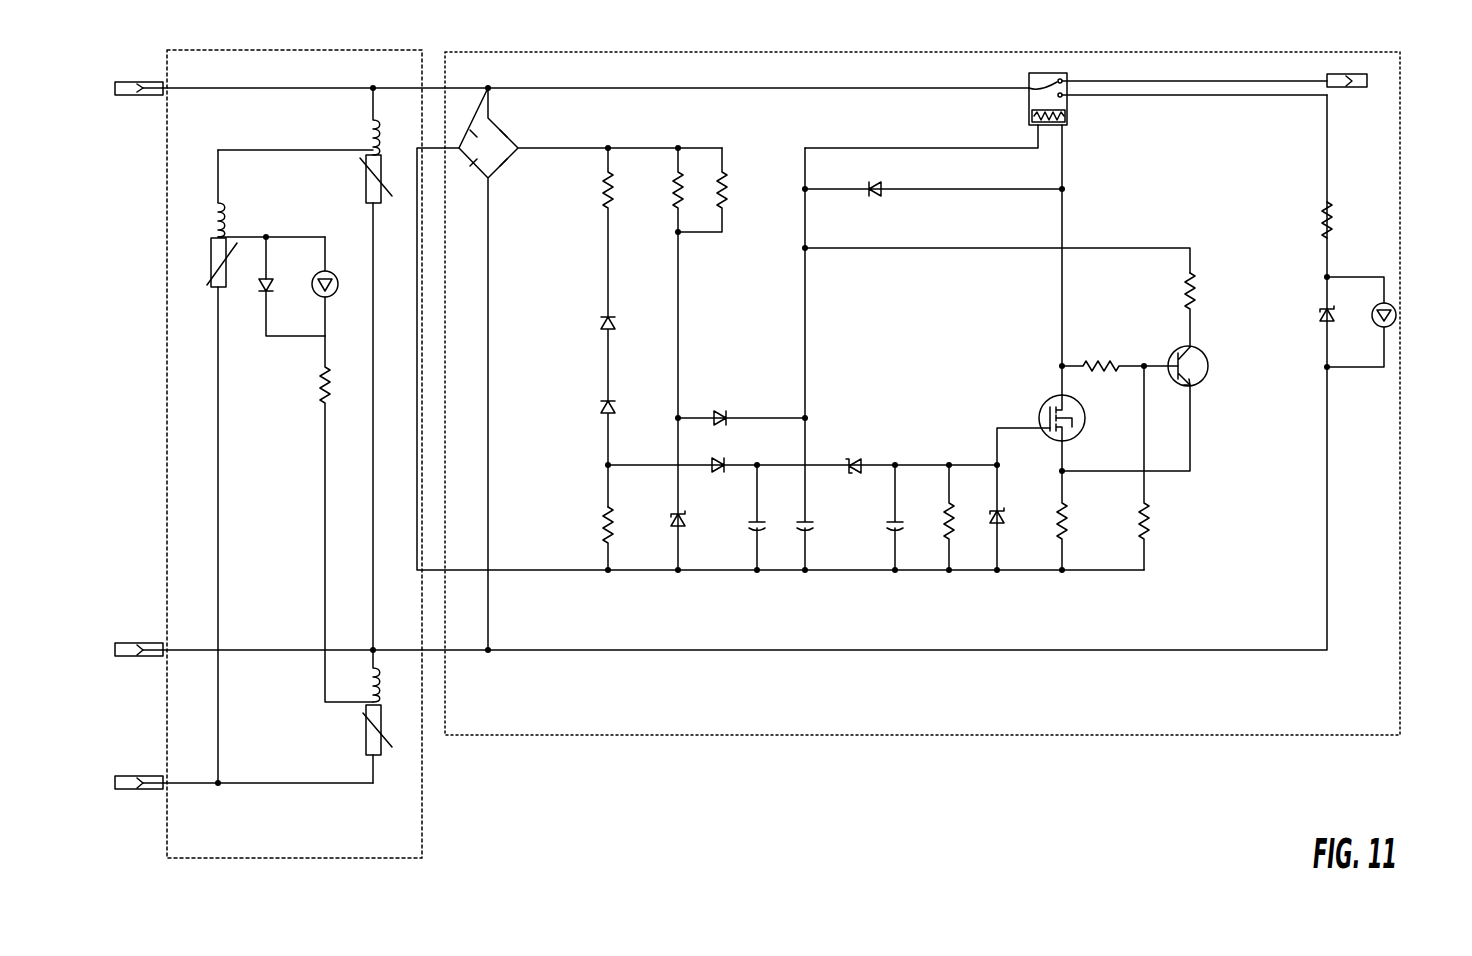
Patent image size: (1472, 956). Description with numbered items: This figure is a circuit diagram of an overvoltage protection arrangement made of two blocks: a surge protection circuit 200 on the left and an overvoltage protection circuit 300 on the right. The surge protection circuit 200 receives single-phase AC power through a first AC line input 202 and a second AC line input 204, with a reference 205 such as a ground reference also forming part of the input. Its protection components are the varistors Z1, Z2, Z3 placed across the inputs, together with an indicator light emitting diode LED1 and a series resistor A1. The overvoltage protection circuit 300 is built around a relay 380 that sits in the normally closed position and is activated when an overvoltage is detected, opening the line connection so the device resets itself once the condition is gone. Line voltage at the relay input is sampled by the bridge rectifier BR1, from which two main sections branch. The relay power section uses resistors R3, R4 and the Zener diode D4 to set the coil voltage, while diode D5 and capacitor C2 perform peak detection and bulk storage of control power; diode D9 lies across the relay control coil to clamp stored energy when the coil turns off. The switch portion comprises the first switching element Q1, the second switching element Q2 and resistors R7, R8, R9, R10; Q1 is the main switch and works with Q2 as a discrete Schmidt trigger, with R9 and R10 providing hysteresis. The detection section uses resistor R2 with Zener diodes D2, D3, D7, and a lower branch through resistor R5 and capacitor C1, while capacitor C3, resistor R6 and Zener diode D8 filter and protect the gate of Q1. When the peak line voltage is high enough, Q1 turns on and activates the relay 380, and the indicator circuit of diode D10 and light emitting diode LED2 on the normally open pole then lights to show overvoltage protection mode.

The surge protection circuit 200 is at (325, 50).
The first AC line input 202 is at (209, 90).
The second AC line input 204 is at (247, 652).
The reference 205 is at (243, 786).
The overvoltage protection circuit 300 is at (1245, 737).
The relay 380 is at (1068, 112).
The varistor Z1 is at (305, 369).
The varistor Z2 is at (251, 466).
The varistor Z3 is at (362, 716).
The light emitting diode LED1 is at (298, 286).
The resistor A1 is at (330, 519).
The bridge rectifier BR1 is at (590, 369).
The resistor R2 is at (589, 232).
The resistor R3 is at (661, 283).
The resistor R4 is at (720, 190).
The resistor R5 is at (592, 540).
The resistor R6 is at (963, 517).
The resistor R7 is at (1075, 522).
The resistor R8 is at (1177, 310).
The resistor R9 is at (1118, 350).
The resistor R10 is at (1163, 468).
The Zener diode D2 is at (587, 350).
The Zener diode D3 is at (587, 448).
The Zener diode D4 is at (663, 494).
The diode D5 is at (743, 402).
The Zener diode D7 is at (861, 448).
The Zener diode D8 is at (1004, 510).
The diode D9 is at (933, 172).
The diode D10 is at (1304, 322).
The capacitor C1 is at (744, 517).
The capacitor C2 is at (821, 360).
The capacitor C3 is at (910, 517).
The first switching element Q1 is at (1081, 299).
The second switching element Q2 is at (1157, 408).
The light emitting diode LED2 is at (1390, 322).